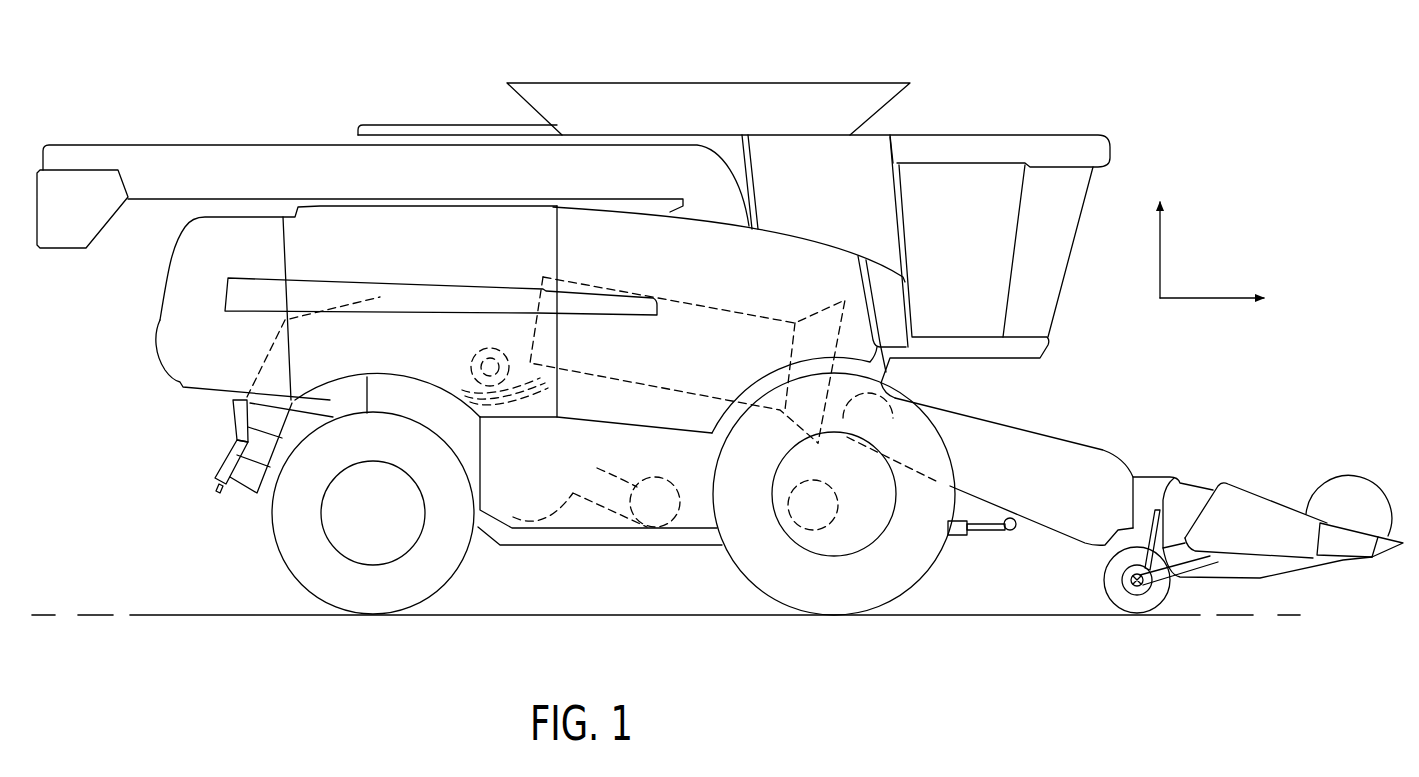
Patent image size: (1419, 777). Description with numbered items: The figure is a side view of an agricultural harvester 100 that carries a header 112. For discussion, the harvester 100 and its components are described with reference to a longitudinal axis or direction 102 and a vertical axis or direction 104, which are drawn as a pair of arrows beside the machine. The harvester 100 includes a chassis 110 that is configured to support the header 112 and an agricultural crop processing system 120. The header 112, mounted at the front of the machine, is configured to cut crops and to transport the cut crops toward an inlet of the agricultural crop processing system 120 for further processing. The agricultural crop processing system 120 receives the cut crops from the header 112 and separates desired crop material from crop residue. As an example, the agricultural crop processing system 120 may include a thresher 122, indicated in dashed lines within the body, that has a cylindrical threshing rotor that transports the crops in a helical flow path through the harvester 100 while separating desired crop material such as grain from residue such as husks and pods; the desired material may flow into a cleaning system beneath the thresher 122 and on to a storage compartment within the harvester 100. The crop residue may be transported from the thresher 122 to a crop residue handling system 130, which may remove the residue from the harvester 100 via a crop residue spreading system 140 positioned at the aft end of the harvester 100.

The agricultural harvester 100 is at (1110, 37).
The longitudinal axis or direction 102 is at (1208, 297).
The vertical axis or direction 104 is at (1160, 253).
The chassis 110 is at (537, 549).
The header 112 is at (1313, 460).
The agricultural crop processing system 120 is at (695, 275).
The thresher 122 is at (708, 300).
The crop residue handling system 130 is at (421, 278).
The crop residue spreading system 140 is at (216, 457).